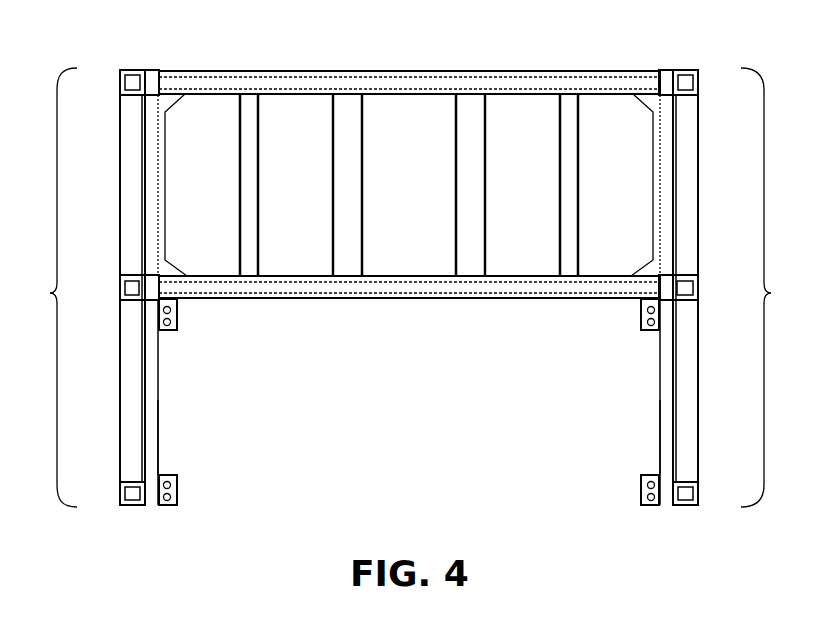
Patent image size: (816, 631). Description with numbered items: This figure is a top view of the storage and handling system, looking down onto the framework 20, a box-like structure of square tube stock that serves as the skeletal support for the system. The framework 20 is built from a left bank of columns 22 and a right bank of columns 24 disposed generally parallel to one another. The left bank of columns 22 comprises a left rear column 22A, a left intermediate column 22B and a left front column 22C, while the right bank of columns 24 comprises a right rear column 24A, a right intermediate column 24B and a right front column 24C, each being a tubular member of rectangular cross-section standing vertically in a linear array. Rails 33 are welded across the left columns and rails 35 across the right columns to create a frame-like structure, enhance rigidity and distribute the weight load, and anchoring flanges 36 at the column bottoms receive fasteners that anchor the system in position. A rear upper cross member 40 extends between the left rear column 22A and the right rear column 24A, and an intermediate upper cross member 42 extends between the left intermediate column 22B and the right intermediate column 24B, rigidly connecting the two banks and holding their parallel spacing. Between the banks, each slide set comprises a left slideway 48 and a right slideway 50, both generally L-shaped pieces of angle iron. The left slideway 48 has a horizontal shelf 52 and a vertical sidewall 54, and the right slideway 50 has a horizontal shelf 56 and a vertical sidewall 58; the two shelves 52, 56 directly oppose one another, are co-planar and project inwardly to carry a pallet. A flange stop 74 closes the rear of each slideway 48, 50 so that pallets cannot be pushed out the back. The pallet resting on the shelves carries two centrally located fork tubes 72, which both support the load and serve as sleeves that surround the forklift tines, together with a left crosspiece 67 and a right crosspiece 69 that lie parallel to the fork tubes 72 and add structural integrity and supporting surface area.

The framework 20 is at (703, 67).
The left bank of columns 22 is at (49, 287).
The left rear column 22A is at (120, 84).
The left intermediate column 22B is at (120, 290).
The left front column 22C is at (120, 493).
The right bank of columns 24 is at (772, 287).
The right rear column 24A is at (698, 84).
The right intermediate column 24B is at (698, 290).
The right front column 24C is at (698, 493).
The rails 33 is at (128, 220).
The rails 35 is at (692, 228).
The anchoring flanges 36 is at (178, 312).
The rear upper cross member 40 is at (413, 80).
The intermediate upper cross member 42 is at (413, 293).
The left slideway 48 is at (163, 409).
The right slideway 50 is at (655, 409).
The horizontal shelf 52 is at (160, 432).
The vertical sidewall 54 is at (150, 368).
The horizontal shelf 56 is at (665, 438).
The vertical sidewall 58 is at (668, 374).
The left crosspiece 67 is at (258, 185).
The right crosspiece 69 is at (578, 205).
The fork tubes 72 is at (362, 245).
The flange stop 74 is at (141, 70).